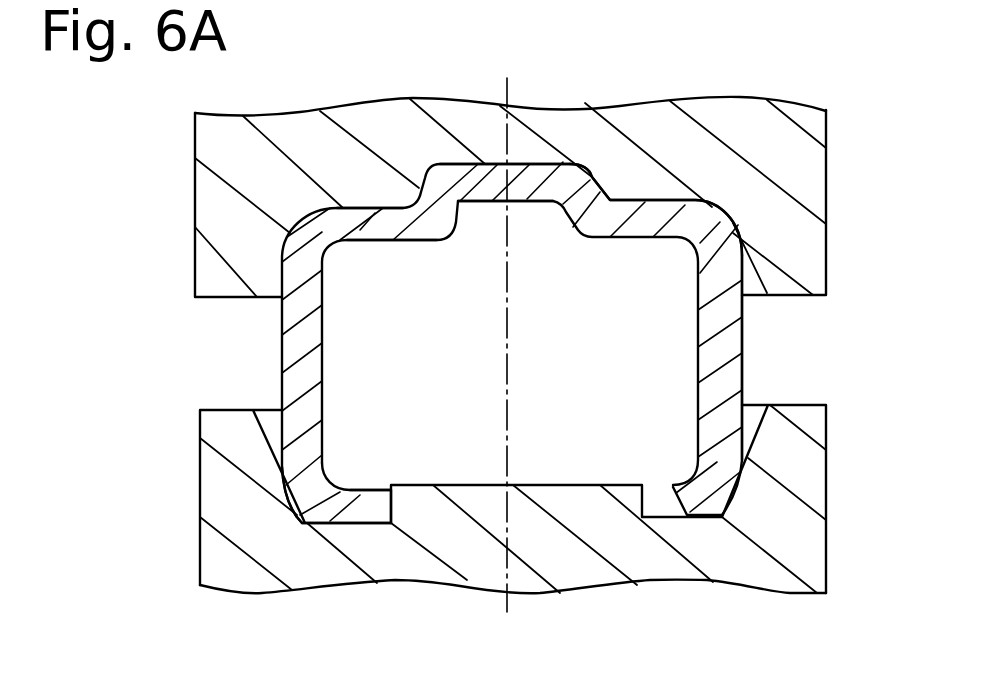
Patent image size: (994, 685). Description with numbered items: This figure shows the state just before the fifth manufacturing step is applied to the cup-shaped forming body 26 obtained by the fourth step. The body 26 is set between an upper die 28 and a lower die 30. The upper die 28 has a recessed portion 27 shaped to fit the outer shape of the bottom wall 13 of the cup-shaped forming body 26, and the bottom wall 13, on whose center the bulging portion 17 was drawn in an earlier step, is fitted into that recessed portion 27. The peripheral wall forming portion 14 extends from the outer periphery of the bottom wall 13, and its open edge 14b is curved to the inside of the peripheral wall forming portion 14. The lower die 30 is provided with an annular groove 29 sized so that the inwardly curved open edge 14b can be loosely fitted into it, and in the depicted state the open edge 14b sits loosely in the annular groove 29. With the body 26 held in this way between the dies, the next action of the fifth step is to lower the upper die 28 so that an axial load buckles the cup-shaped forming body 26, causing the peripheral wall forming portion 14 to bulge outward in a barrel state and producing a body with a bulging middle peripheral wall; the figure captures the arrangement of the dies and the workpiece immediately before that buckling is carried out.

The bottom wall 13 is at (660, 205).
The peripheral wall forming portion 14 is at (282, 355).
The open edge 14b is at (328, 505).
The bulging portion 17 is at (542, 170).
The cup-shaped forming body 26 is at (743, 364).
The recessed portion 27 is at (372, 210).
The upper die 28 is at (198, 196).
The annular groove 29 is at (369, 522).
The lower die 30 is at (203, 487).